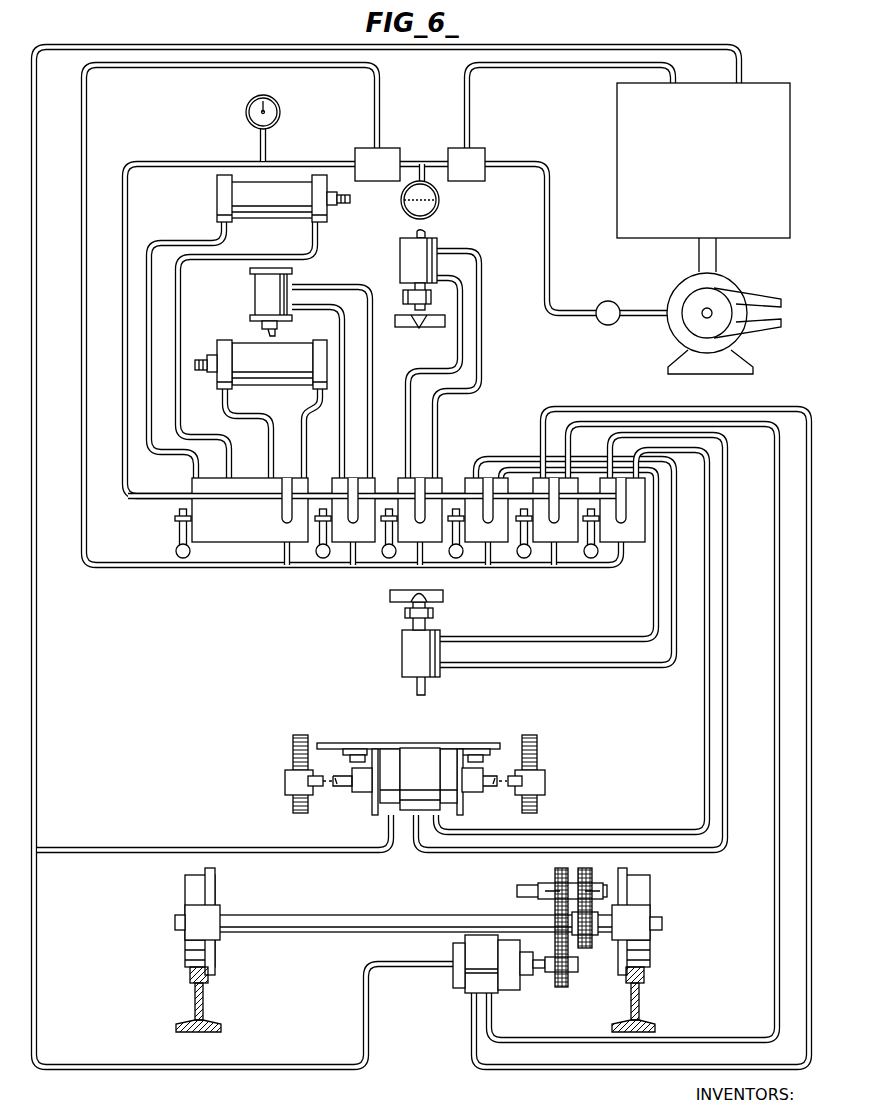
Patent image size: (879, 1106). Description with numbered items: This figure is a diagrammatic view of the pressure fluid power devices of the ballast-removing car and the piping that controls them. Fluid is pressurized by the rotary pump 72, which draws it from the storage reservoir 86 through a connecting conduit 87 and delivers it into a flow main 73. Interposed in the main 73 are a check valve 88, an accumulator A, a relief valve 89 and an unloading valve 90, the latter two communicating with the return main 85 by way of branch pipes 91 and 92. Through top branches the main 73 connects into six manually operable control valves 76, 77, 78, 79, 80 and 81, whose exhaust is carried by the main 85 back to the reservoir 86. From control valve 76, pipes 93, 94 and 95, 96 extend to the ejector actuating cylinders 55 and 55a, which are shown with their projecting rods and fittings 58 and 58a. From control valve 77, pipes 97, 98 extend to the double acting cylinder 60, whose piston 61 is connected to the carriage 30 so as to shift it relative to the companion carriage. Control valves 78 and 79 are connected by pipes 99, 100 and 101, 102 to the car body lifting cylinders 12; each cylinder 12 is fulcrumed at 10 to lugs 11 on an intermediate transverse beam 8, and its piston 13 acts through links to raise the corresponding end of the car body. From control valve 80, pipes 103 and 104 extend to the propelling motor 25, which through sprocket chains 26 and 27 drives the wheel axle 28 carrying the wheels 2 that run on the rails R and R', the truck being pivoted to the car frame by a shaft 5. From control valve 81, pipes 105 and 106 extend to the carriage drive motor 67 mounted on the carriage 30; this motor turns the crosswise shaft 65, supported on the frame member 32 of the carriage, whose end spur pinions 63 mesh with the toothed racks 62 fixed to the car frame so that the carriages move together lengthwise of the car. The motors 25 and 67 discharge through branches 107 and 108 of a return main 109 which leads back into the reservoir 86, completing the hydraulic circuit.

The return main 109 is at (288, 44).
The branch 107 is at (292, 1070).
The branch pipe 92 is at (380, 97).
The return main 85 is at (561, 68).
The branch pipe 91 is at (471, 97).
The main 73 is at (549, 204).
The unloading valve 90 is at (385, 152).
The relief valve 89 is at (478, 156).
The storage reservoir 86 is at (616, 148).
The connecting conduit 87 is at (718, 255).
The accumulator A is at (440, 200).
The piston 13 is at (426, 234).
The pressure fluid cylinder 12 is at (399, 262).
The fulcrum 10 is at (404, 297).
The intermediate transverse beam 8 is at (399, 326).
The lugs 11 is at (419, 329).
The pipe 99 is at (458, 356).
The pipe 100 is at (481, 354).
The check valve 88 is at (607, 326).
The rotary pump 72 is at (681, 334).
The double acting pressure fluid cylinder 60 is at (254, 297).
The piston 61 is at (262, 328).
The nozzle 58 is at (200, 358).
The ejector actuating cylinder 55 is at (297, 344).
The ejector actuating cylinder 55a is at (272, 206).
The nozzle 58a is at (344, 205).
The pipe 93 is at (170, 241).
The pipe 94 is at (181, 422).
The pipe 95 is at (268, 432).
The pipe 96 is at (307, 432).
The pipe 97 is at (344, 400).
The pipe 98 is at (372, 400).
The pipe 101 is at (474, 458).
The pipe 102 is at (506, 466).
The pipe 103 is at (772, 408).
The pipe 104 is at (774, 469).
The pipe 105 is at (728, 674).
The pipe 106 is at (704, 694).
The branch 108 is at (212, 848).
The control valve 76 is at (277, 536).
The control valve 77 is at (345, 536).
The control valve 78 is at (410, 536).
The control valve 79 is at (474, 538).
The control valve 80 is at (543, 538).
The control valve 81 is at (608, 538).
The toothed racks 62 is at (292, 744).
The spur pinions 63 is at (285, 782).
The carriage 30 is at (335, 741).
The pressure fluid motor 67 is at (419, 760).
The frame member 32 is at (474, 743).
The crosswise shaft 65 is at (341, 790).
The wheel axle 28 is at (338, 914).
The shaft 5 is at (530, 886).
The sprocket chain 26 is at (556, 910).
The sprocket chain 27 is at (598, 945).
The wheels 2 is at (184, 947).
The rail R is at (189, 999).
The rail R' is at (643, 999).
The pressure fluid motor 25 is at (510, 978).